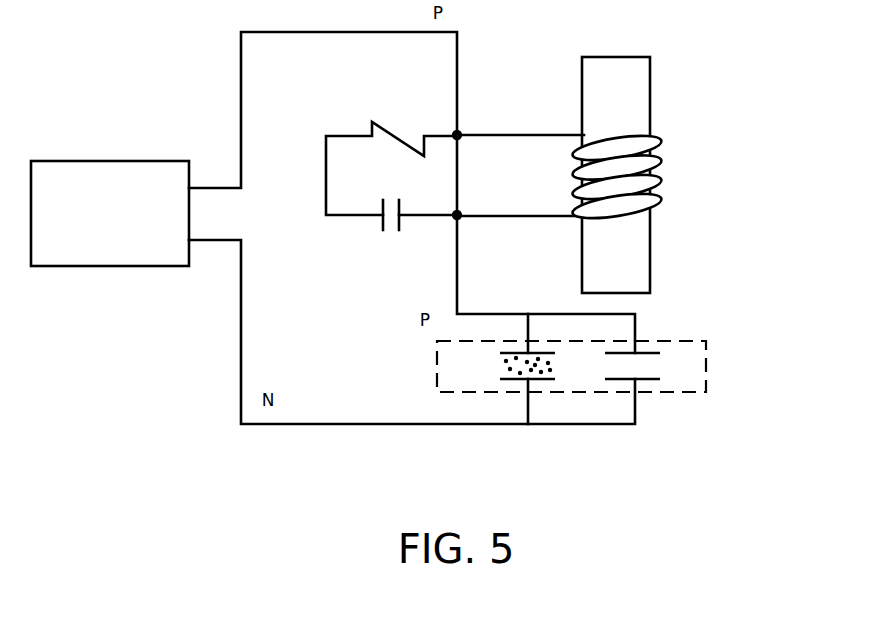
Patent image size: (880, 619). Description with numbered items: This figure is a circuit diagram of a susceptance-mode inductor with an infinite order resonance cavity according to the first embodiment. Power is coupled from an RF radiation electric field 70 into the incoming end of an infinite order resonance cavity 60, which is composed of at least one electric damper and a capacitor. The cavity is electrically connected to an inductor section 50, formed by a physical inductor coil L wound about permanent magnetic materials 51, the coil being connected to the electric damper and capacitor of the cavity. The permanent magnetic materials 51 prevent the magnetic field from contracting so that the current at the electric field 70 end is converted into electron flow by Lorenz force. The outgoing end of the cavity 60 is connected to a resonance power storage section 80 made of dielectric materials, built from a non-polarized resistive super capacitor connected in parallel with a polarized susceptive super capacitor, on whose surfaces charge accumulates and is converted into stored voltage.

The RF radiation electric field 70 is at (100, 258).
The infinite order resonance cavity 60 is at (347, 226).
The permanent magnetic materials 51 is at (638, 88).
The inductor section 50 is at (655, 168).
The inductor coil L is at (638, 185).
The resonance power storage section 80 is at (685, 392).